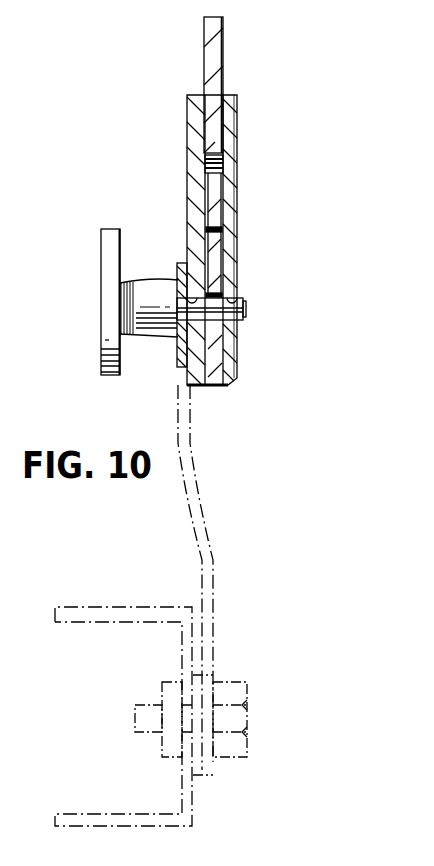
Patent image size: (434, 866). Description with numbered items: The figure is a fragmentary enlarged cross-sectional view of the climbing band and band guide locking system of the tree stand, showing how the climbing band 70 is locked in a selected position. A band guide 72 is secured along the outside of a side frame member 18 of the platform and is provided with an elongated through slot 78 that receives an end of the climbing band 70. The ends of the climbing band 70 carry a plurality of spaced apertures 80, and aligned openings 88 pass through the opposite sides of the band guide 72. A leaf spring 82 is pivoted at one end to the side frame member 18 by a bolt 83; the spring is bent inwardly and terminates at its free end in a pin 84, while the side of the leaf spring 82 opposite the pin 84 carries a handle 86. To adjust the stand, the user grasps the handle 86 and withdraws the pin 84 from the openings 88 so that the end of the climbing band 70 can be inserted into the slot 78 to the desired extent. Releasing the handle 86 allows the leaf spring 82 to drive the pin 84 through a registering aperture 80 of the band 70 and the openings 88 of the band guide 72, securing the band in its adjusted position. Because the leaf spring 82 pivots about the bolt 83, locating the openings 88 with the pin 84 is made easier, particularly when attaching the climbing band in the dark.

The side frame member 18 is at (137, 607).
The climbing band 70 is at (203, 53).
The band guide 72 is at (187, 195).
The elongated through slot 78 is at (206, 210).
The aperture 80 is at (205, 165).
The leaf spring 82 is at (207, 523).
The bolt 83 is at (232, 757).
The pin 84 is at (247, 316).
The handle 86 is at (108, 292).
The aligned opening 88 is at (178, 282).